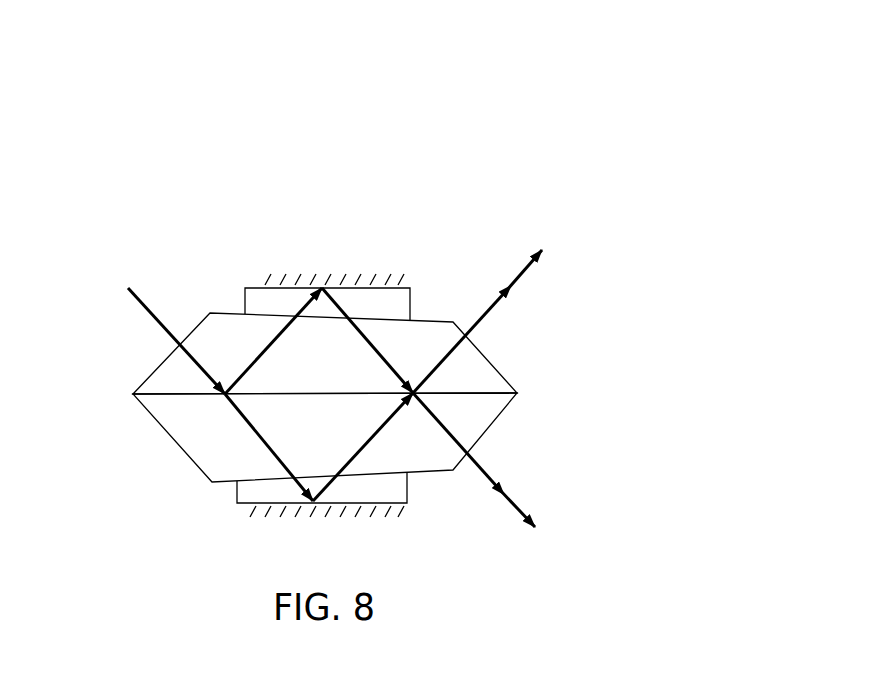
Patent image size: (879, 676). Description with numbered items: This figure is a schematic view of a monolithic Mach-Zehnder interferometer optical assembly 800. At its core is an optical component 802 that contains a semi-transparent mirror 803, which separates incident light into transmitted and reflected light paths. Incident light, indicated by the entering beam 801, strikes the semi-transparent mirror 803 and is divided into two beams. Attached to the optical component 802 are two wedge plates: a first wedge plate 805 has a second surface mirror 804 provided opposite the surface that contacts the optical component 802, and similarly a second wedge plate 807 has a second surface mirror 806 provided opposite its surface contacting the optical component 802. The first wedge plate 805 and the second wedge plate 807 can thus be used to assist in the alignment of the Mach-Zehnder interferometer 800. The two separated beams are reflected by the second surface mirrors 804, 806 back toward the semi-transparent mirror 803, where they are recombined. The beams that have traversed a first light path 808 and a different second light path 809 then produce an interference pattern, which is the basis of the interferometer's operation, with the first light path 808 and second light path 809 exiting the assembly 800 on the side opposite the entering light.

The monolithic Mach-Zehnder interferometer optical assembly 800 is at (358, 313).
The input light beam 801 is at (152, 341).
The optical component 802 is at (325, 320).
The semi-transparent mirror 803 is at (298, 441).
The second surface mirror 804 is at (301, 265).
The first wedge plate 805 is at (368, 260).
The second surface mirror 806 is at (287, 514).
The second wedge plate 807 is at (357, 508).
The first light path 808 is at (498, 321).
The second light path 809 is at (498, 460).